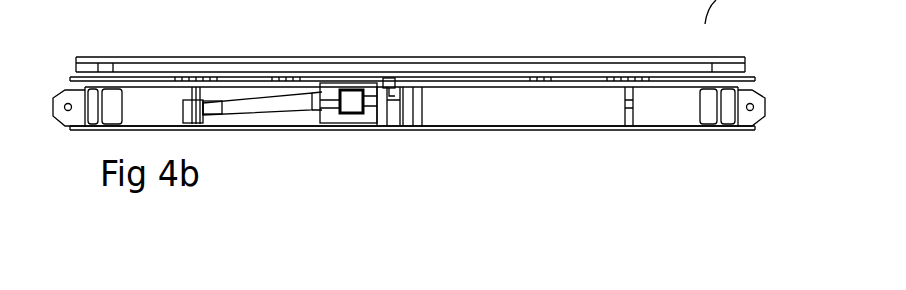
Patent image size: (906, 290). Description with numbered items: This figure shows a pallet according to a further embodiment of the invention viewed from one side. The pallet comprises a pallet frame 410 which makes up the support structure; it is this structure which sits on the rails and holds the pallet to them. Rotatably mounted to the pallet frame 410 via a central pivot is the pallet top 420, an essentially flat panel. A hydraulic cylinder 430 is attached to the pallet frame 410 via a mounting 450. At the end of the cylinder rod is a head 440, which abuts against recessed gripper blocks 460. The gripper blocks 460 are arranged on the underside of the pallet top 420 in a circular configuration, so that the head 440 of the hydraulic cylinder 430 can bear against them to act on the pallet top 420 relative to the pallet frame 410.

The pallet frame 410 is at (700, 130).
The pallet top 420 is at (573, 75).
The hydraulic cylinder 430 is at (283, 103).
The head 440 is at (373, 85).
The mounting 450 is at (353, 117).
The gripper blocks 460 is at (517, 80).